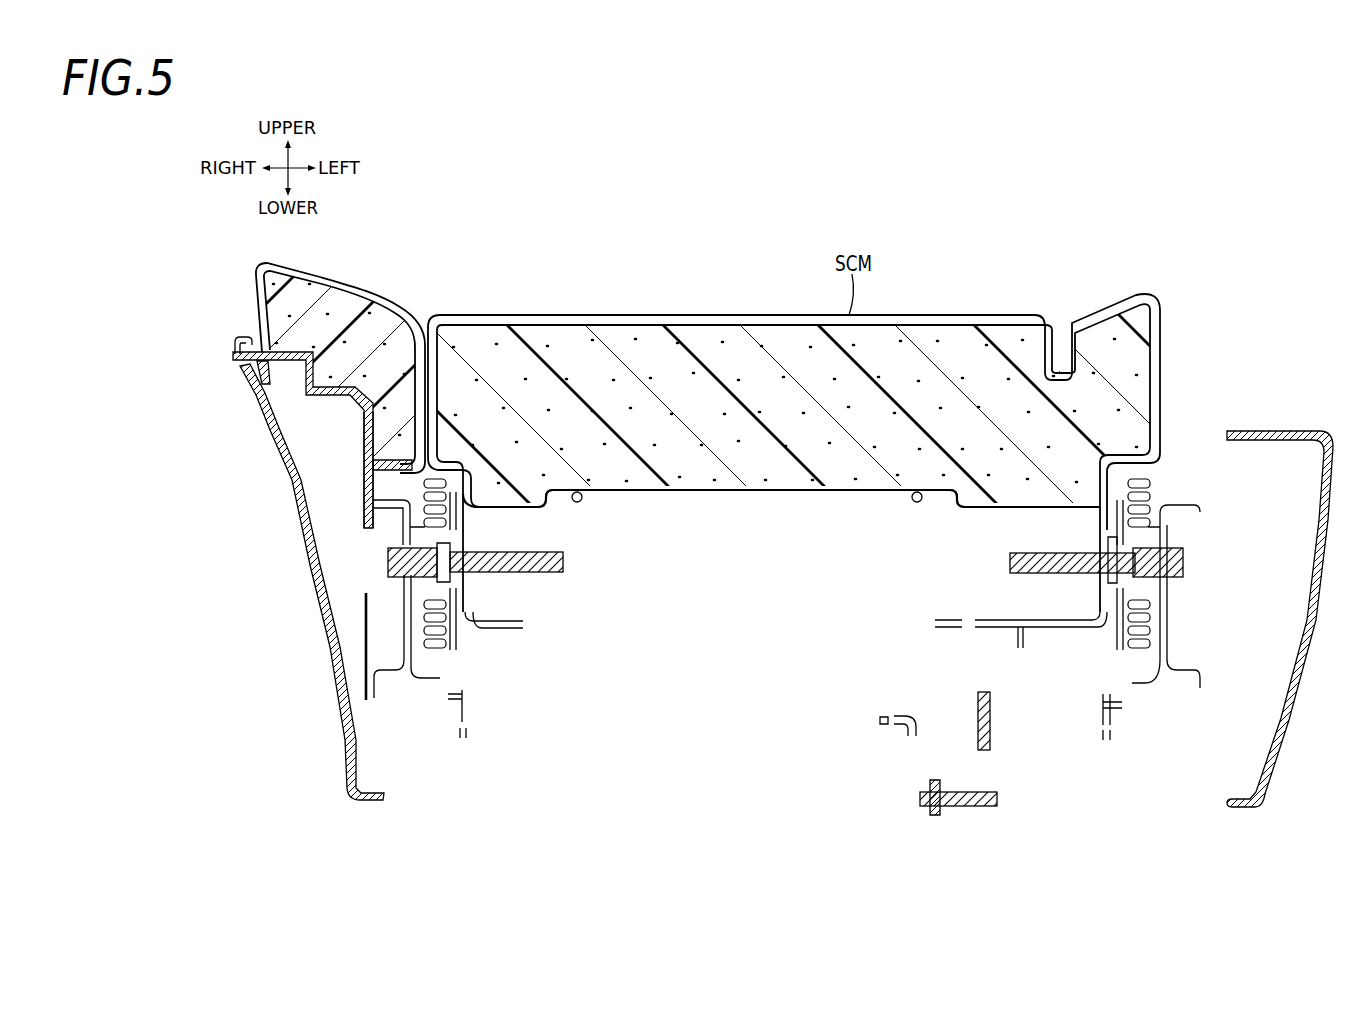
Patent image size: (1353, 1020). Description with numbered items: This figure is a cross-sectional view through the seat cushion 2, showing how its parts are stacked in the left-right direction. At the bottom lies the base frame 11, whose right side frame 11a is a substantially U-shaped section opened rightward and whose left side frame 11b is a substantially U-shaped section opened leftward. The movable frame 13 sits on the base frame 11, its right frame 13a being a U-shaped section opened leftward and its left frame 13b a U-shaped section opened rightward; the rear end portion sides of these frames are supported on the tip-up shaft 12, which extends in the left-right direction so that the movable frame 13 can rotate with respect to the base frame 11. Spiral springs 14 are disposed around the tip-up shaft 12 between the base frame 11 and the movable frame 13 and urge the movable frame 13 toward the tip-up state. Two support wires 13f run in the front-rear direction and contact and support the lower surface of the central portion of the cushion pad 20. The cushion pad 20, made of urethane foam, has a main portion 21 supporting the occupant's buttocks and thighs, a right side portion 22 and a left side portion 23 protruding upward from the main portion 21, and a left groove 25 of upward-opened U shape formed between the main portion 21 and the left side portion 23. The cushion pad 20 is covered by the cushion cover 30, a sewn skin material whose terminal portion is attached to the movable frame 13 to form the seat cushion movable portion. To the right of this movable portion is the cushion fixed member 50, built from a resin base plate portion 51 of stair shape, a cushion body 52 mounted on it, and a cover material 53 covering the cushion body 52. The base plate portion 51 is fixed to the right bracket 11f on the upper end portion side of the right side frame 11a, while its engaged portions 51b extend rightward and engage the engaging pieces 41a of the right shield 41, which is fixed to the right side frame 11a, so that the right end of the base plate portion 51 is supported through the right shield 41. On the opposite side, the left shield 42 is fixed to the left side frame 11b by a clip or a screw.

The seat cushion 2 is at (776, 236).
The cushion cover 30 is at (541, 315).
The cushion pad 20 is at (714, 521).
The main portion 21 is at (641, 330).
The right side portion 22 is at (368, 290).
The left side portion 23 is at (1097, 312).
The left groove 25 is at (1059, 372).
The cushion body 52 is at (388, 328).
The cushion fixed member 50 is at (256, 300).
The cover material 53 is at (321, 270).
The base plate portion 51 is at (338, 404).
The engaged portion 51b is at (266, 388).
The base frame 11 is at (802, 578).
The right side frame 11a is at (386, 690).
The left side frame 11b is at (1195, 504).
The right bracket 11f is at (364, 458).
The tip-up shaft 12 is at (562, 552).
The movable frame 13 is at (796, 588).
The right frame 13a is at (505, 628).
The left frame 13b is at (1069, 630).
The support wire 13f is at (583, 500).
The spiral spring 14 is at (445, 642).
The right shield 41 is at (308, 567).
The engaging piece 41a is at (248, 372).
The left shield 42 is at (1286, 712).